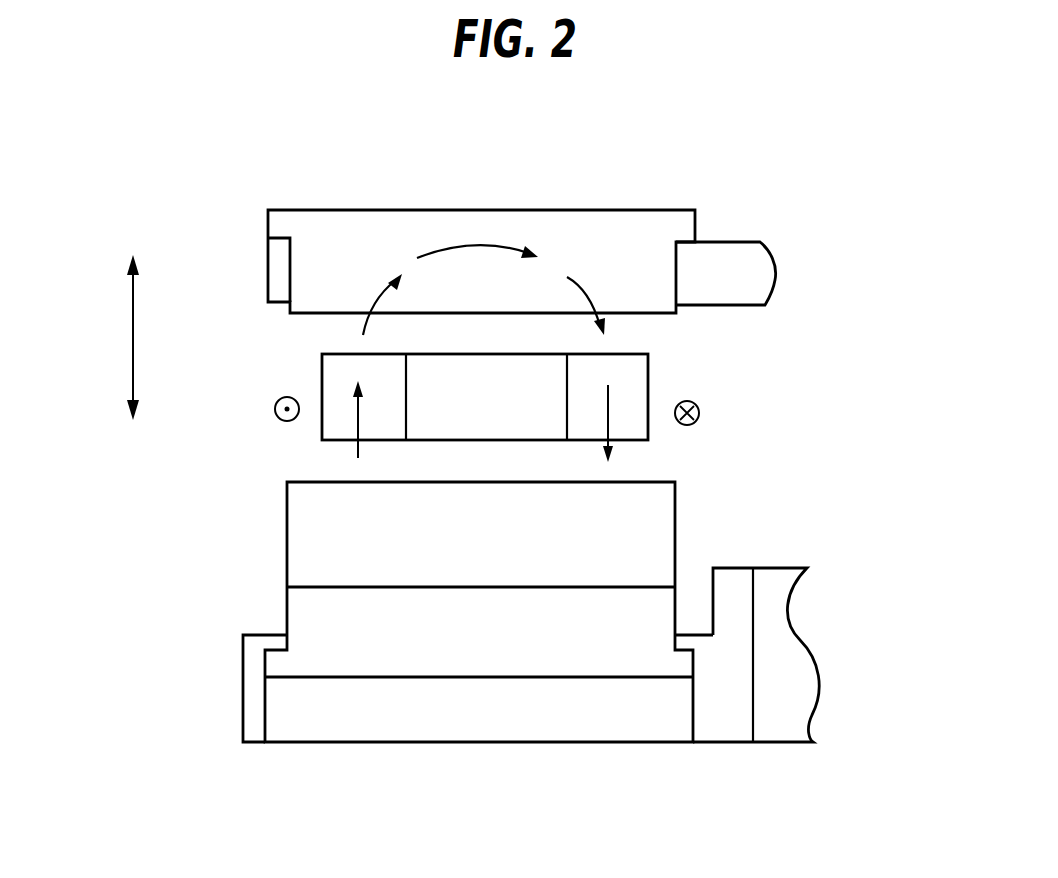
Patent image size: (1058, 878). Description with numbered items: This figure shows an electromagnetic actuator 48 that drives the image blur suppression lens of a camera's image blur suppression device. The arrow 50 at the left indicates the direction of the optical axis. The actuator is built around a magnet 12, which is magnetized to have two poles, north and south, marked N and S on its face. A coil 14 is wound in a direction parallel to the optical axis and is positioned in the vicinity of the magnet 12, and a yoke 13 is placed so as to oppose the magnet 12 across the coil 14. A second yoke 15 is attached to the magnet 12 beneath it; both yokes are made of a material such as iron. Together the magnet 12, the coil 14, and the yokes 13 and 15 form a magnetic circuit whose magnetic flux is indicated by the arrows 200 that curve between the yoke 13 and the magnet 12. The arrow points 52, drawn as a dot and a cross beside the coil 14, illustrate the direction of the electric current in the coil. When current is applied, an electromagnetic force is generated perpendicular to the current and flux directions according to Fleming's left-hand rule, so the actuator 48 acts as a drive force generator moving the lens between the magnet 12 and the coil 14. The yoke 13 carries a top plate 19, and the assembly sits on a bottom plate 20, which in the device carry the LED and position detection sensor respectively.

The magnet 12 is at (655, 520).
The yoke 13 is at (623, 248).
The coil 14 is at (633, 424).
The yoke 15 is at (318, 612).
The top plate 19 is at (752, 288).
The bottom plate 20 is at (723, 720).
The electromagnetic actuator 48 is at (925, 279).
The arrow 50 is at (133, 337).
The arrow points 52 is at (275, 409).
The arrows 200 is at (478, 250).